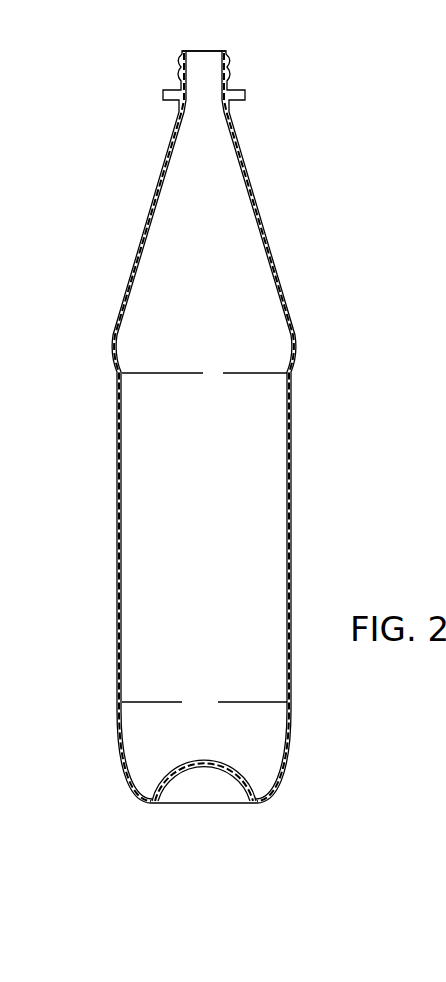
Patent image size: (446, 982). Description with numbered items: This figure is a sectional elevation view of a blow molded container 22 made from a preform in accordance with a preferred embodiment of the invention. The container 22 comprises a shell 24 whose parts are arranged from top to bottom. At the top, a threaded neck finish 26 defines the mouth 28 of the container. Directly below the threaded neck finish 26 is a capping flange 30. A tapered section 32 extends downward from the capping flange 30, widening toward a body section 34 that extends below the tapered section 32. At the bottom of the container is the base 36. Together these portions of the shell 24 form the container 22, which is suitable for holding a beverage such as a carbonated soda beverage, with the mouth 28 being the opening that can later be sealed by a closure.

The container 22 is at (290, 277).
The shell 24 is at (291, 418).
The threaded neck finish 26 is at (233, 76).
The mouth 28 is at (186, 48).
The capping flange 30 is at (243, 101).
The tapered section 32 is at (140, 230).
The body section 34 is at (117, 502).
The base 36 is at (218, 778).